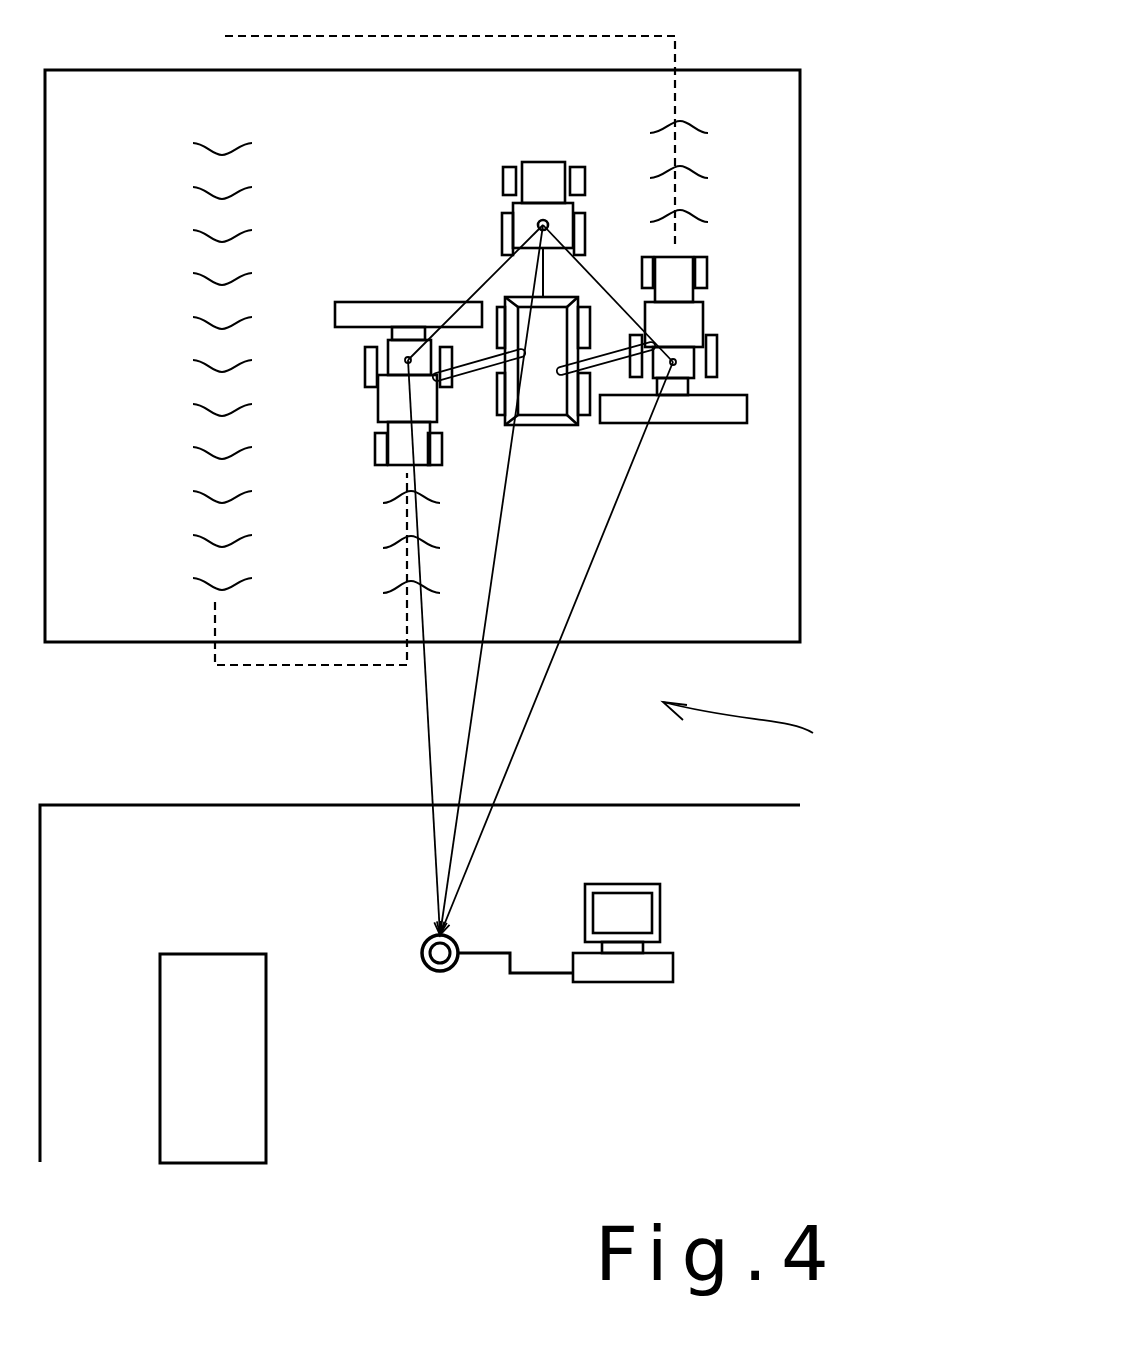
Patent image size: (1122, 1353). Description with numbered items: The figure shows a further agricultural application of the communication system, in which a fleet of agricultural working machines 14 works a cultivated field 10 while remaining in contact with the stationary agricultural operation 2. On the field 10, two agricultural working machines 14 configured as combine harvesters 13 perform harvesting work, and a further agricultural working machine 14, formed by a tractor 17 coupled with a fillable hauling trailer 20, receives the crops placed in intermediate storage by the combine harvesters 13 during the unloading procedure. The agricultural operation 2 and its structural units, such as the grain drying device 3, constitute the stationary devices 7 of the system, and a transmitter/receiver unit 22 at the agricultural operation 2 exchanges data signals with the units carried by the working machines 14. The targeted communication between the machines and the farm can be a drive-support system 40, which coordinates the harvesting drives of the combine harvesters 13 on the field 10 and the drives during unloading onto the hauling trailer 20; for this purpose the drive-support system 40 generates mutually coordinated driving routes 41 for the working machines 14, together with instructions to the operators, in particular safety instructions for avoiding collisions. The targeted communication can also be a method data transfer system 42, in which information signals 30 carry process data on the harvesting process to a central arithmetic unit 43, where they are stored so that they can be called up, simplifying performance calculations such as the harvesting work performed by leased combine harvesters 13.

The agricultural operation 2 is at (420, 984).
The grain drying device 3 is at (245, 1103).
The stationary devices 7 is at (420, 984).
The cultivated field 10 is at (127, 593).
The combine harvester 13 is at (373, 312).
The agricultural working machine 14 is at (603, 315).
The tractor 17 is at (538, 168).
The hauling trailer 20 is at (547, 410).
The transmitter/receiver unit 22 is at (440, 963).
The information signals 30 is at (484, 283).
The drive-support system 40 is at (767, 736).
The driving routes 41 is at (677, 62).
The method data transfer system 42 is at (568, 1015).
The central arithmetic unit 43 is at (620, 977).